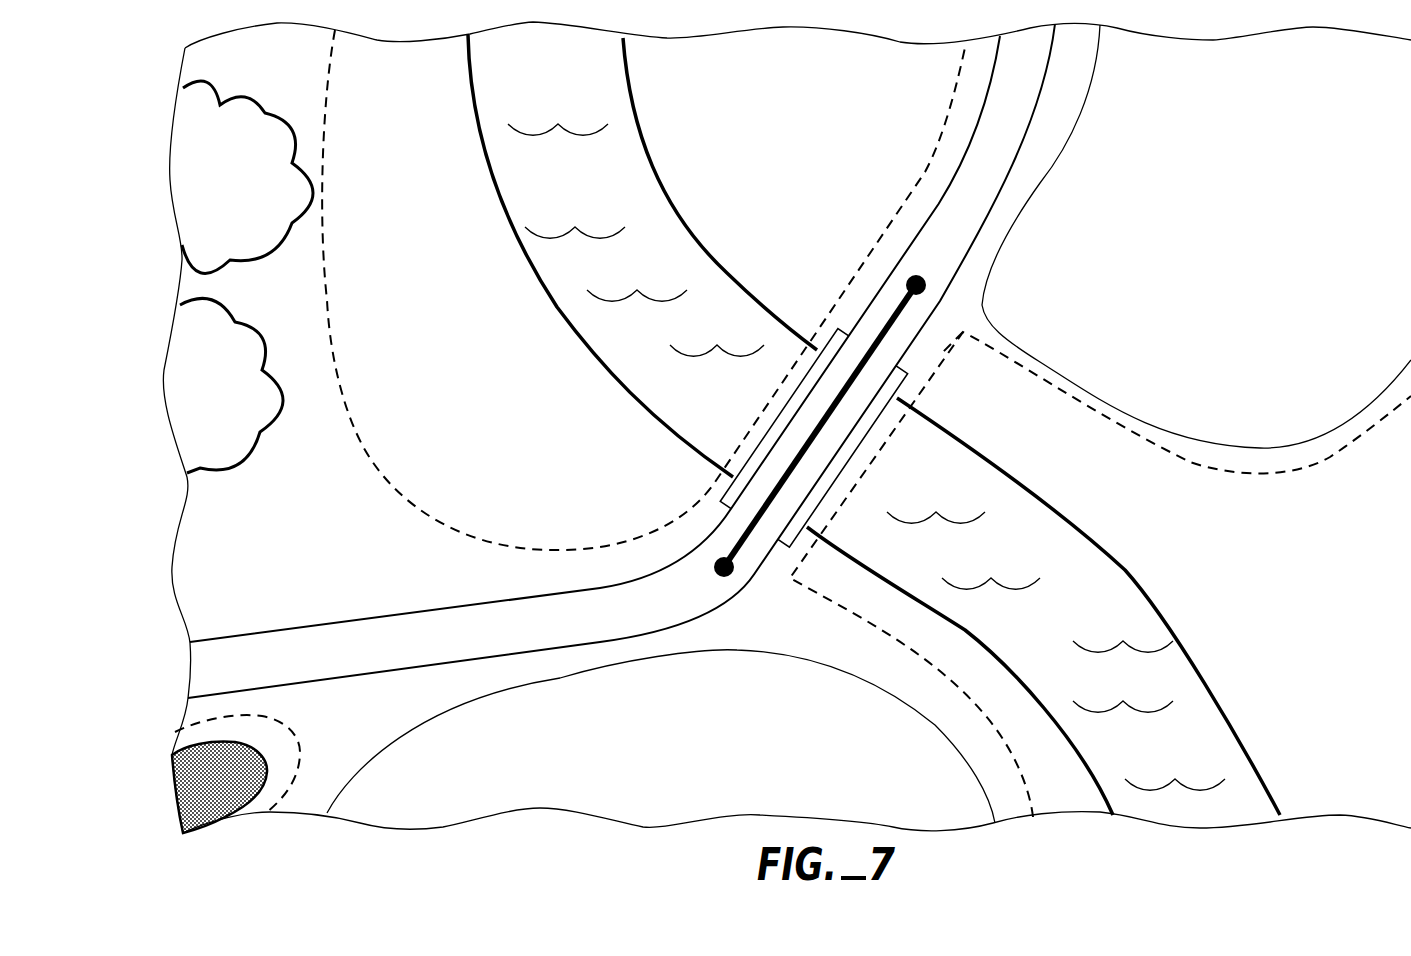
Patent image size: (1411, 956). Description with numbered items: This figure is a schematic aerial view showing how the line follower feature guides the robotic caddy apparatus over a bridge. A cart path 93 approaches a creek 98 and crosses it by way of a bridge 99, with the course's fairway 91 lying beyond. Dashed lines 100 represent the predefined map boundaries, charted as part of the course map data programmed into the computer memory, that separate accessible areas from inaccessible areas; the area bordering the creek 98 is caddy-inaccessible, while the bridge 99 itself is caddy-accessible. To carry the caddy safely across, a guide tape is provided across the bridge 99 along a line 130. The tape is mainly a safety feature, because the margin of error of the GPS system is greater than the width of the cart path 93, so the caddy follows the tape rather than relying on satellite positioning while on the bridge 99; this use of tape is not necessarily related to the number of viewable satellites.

The fairway 91 is at (1266, 302).
The cart path 93 is at (997, 110).
The creek 98 is at (630, 168).
The bridge 99 is at (785, 405).
The dashed lines 100 is at (905, 200).
The line 130 is at (742, 552).